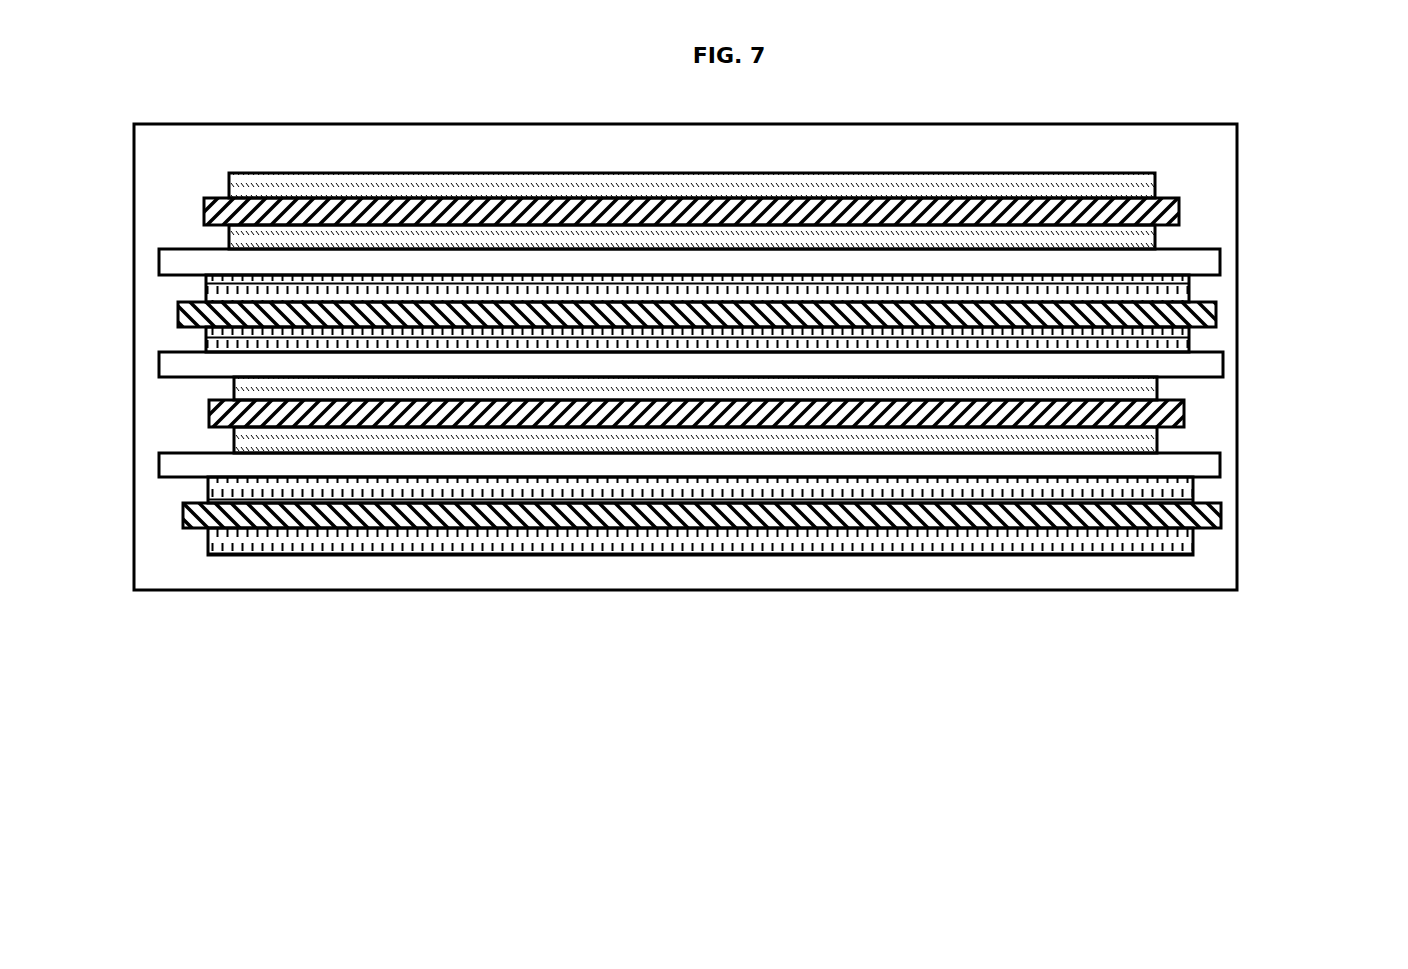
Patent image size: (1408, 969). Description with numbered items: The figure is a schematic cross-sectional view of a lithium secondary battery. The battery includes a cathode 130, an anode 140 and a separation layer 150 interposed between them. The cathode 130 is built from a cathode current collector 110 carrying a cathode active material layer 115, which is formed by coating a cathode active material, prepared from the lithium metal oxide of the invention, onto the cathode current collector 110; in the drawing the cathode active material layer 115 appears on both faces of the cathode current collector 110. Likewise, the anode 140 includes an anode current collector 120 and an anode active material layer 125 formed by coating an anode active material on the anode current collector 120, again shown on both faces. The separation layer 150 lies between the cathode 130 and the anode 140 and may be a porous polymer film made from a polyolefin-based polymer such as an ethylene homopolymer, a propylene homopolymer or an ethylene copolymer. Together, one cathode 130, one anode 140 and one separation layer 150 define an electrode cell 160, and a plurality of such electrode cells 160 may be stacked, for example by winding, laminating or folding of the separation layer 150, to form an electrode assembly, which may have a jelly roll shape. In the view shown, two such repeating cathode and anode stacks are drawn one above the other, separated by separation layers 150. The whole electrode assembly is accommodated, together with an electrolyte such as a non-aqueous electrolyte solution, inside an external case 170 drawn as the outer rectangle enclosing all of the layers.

The cathode current collector 110 is at (1180, 207).
The cathode active material layer 115 is at (1155, 178).
The anode current collector 120 is at (1216, 309).
The anode active material layer 125 is at (1189, 284).
The cathode 130 is at (178, 250).
The anode 140 is at (168, 278).
The separation layer 150 is at (159, 262).
The electrode cell 160 is at (1357, 172).
The external case 170 is at (327, 590).